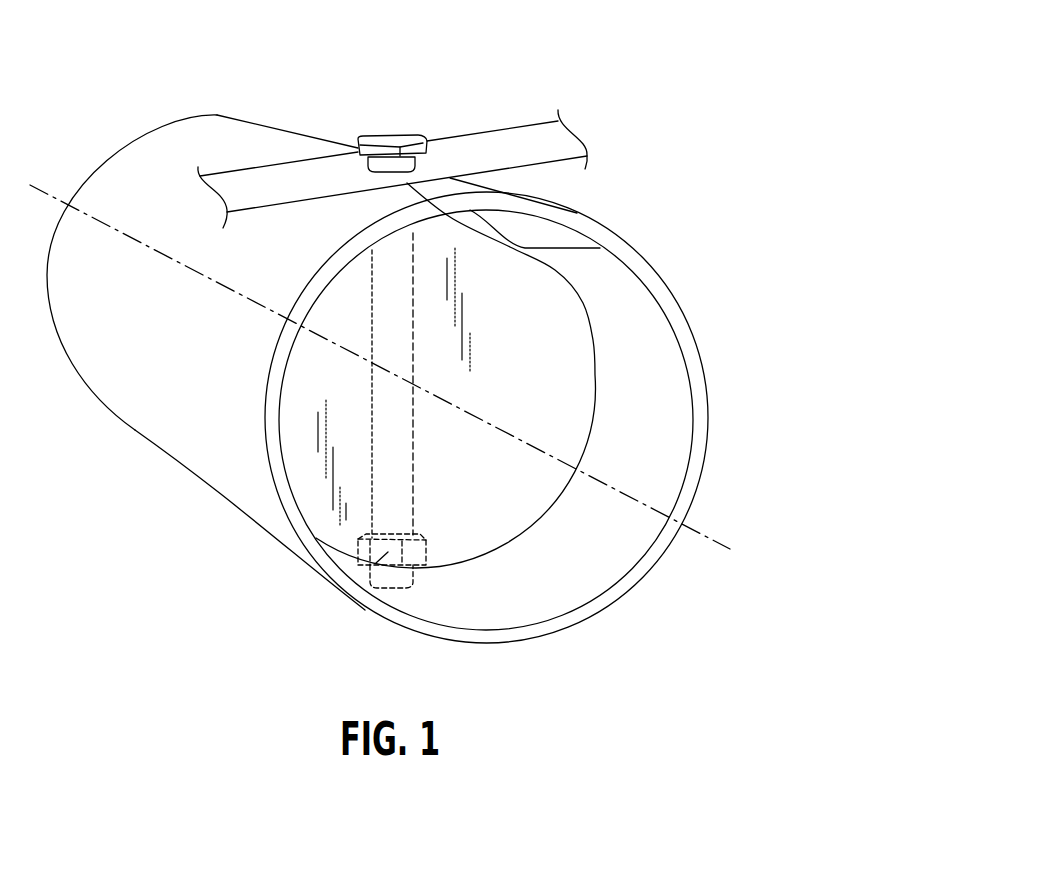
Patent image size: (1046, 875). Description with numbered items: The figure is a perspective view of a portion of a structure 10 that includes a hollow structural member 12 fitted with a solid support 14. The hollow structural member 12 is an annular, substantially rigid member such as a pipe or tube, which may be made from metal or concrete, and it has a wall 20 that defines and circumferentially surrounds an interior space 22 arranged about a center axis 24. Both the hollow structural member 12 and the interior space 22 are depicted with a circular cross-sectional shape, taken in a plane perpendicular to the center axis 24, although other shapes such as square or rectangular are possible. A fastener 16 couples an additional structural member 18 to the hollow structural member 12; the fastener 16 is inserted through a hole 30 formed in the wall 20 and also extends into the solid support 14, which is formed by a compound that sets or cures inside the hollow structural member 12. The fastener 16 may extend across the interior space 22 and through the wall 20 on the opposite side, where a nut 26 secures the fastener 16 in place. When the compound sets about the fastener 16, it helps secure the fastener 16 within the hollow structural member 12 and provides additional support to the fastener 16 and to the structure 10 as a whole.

The structure 10 is at (648, 48).
The hollow structural member 12 is at (582, 211).
The solid support 14 is at (540, 325).
The fastener 16 is at (390, 136).
The additional structural member 18 is at (495, 133).
The wall 20 is at (178, 430).
The interior space 22 is at (653, 378).
The center axis 24 is at (695, 526).
The nut 26 is at (368, 573).
The hole 30 is at (600, 248).